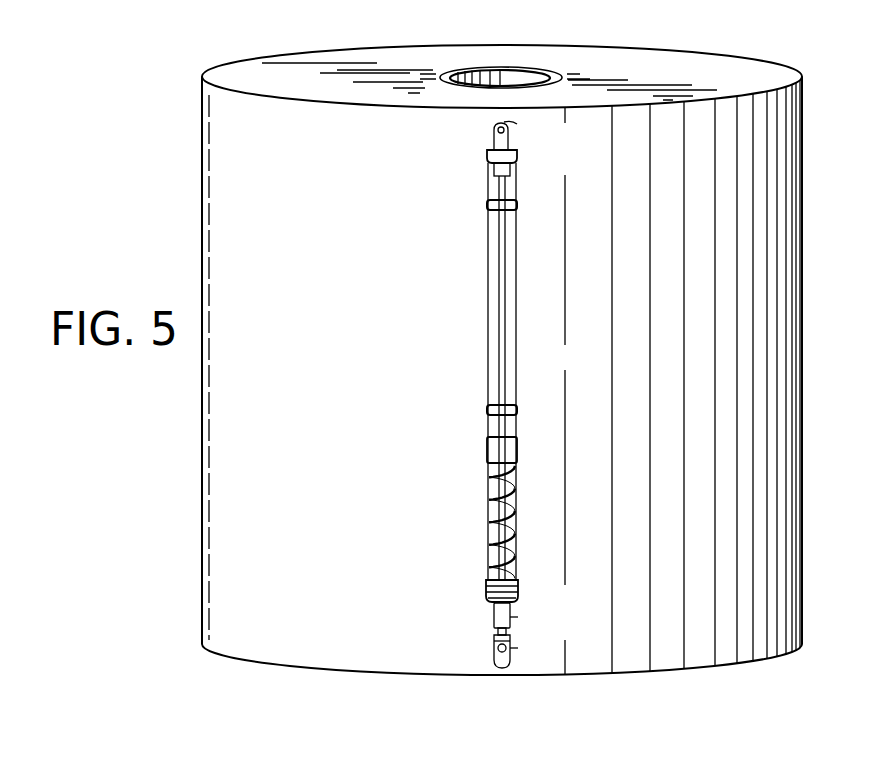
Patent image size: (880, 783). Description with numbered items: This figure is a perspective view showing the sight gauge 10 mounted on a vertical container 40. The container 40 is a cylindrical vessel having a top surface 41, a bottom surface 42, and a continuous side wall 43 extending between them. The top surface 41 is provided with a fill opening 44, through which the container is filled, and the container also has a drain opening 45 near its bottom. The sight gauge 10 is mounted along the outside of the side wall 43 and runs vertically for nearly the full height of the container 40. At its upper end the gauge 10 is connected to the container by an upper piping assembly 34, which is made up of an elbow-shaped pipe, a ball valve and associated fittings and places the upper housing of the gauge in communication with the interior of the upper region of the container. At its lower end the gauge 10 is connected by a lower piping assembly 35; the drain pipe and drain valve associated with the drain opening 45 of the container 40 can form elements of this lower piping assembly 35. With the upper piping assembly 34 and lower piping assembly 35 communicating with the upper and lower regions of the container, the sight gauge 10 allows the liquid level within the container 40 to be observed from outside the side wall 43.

The sight gauge 10 is at (525, 362).
The upper piping assembly 34 is at (512, 151).
The lower piping assembly 35 is at (516, 607).
The vertical container 40 is at (200, 190).
The top surface 41 is at (313, 78).
The bottom surface 42 is at (296, 674).
The continuous side wall 43 is at (367, 354).
The fill opening 44 is at (505, 72).
The drain opening 45 is at (495, 647).